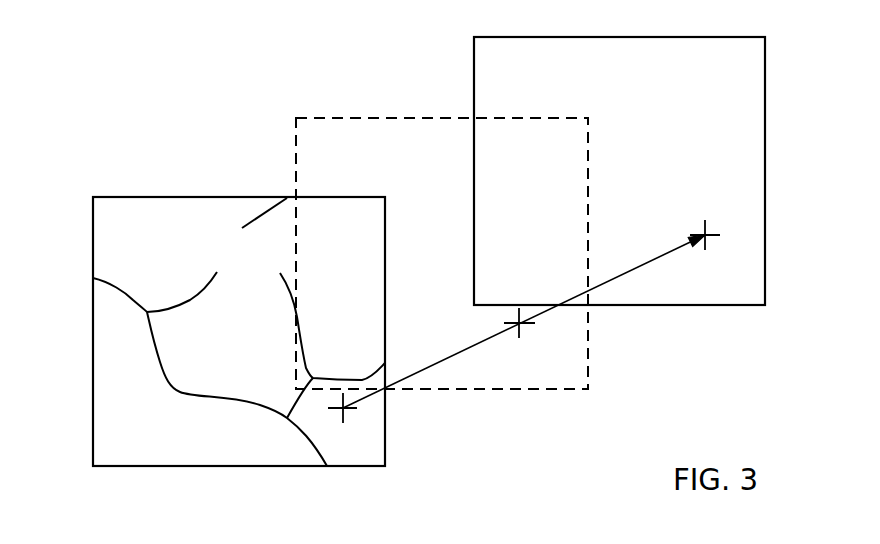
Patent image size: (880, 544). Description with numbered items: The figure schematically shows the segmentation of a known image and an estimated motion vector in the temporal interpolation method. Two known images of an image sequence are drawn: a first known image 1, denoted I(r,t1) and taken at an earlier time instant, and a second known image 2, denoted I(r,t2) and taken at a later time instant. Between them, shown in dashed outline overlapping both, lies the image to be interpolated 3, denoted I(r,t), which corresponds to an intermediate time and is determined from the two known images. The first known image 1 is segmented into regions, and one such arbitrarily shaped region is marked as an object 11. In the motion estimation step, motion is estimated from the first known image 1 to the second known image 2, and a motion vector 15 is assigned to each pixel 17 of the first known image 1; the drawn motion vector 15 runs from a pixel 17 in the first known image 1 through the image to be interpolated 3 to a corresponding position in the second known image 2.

The first known image 1 is at (122, 197).
The second known image 2 is at (474, 67).
The image to be interpolated 3 is at (312, 118).
The object 11 is at (250, 378).
The motion vector 15 is at (630, 272).
The pixel 17 is at (347, 410).